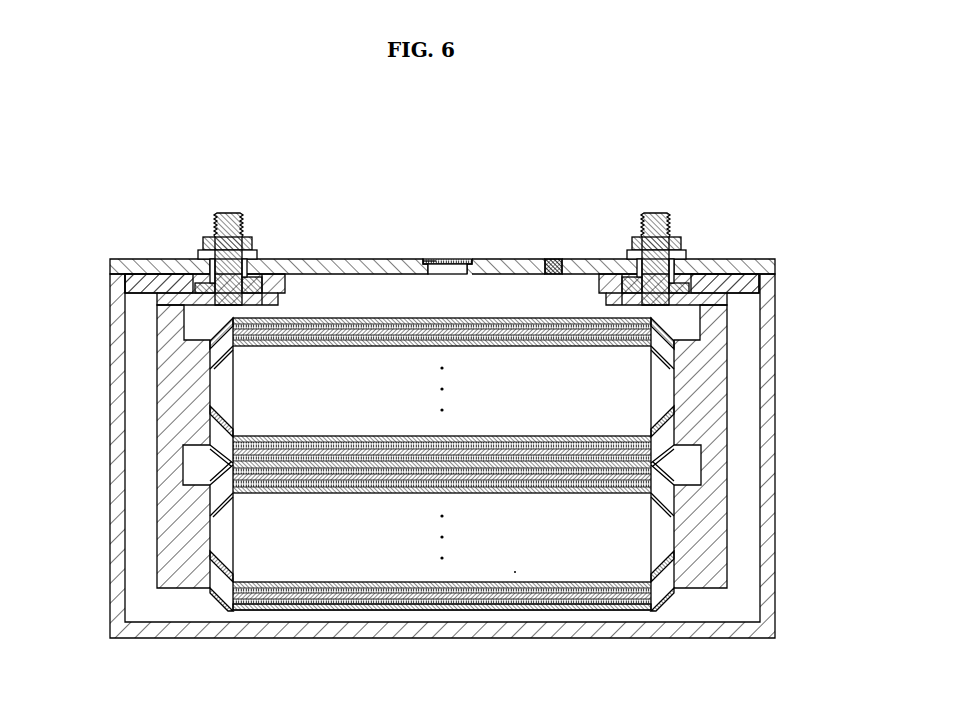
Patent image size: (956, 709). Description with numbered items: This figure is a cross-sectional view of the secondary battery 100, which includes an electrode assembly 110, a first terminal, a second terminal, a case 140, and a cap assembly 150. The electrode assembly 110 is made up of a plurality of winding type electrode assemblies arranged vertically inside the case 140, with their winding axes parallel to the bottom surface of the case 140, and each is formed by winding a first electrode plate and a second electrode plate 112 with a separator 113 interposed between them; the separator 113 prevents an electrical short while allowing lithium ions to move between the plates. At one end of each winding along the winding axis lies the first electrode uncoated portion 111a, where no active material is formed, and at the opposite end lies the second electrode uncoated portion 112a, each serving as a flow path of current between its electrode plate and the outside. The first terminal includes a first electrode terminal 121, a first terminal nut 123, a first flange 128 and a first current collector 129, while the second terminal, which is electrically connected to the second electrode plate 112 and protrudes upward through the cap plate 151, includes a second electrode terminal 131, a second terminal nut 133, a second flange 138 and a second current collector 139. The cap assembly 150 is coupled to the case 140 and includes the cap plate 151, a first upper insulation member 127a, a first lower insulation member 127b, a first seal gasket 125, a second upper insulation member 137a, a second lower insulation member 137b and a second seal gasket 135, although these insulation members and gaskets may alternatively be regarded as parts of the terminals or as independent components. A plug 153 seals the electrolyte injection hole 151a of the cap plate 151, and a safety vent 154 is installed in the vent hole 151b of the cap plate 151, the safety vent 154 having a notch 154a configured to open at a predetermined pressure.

The secondary battery 100 is at (83, 120).
The electrode assembly 110 is at (446, 506).
The first electrode uncoated portion 111a is at (222, 600).
The second electrode plate 112 is at (287, 612).
The second electrode uncoated portion 112a is at (662, 604).
The separator 113 is at (415, 612).
The first electrode terminal 121 is at (228, 211).
The first terminal nut 123 is at (210, 236).
The first seal gasket 125 is at (265, 260).
The first upper insulation member 127a is at (257, 251).
The first lower insulation member 127b is at (140, 263).
The first flange 128 is at (184, 271).
The first current collector 129 is at (140, 404).
The second electrode terminal 131 is at (655, 211).
The second terminal nut 133 is at (640, 237).
The second seal gasket 135 is at (680, 267).
The second upper insulation member 137a is at (687, 250).
The second lower insulation member 137b is at (752, 293).
The second flange 138 is at (616, 282).
The second current collector 139 is at (745, 404).
The case 140 is at (112, 508).
The cap assembly 150 is at (514, 180).
The cap plate 151 is at (512, 258).
The electrolyte injection hole 151a is at (552, 278).
The vent hole 151b is at (443, 277).
The plug 153 is at (553, 258).
The safety vent 154 is at (462, 258).
The notch 154a is at (434, 258).